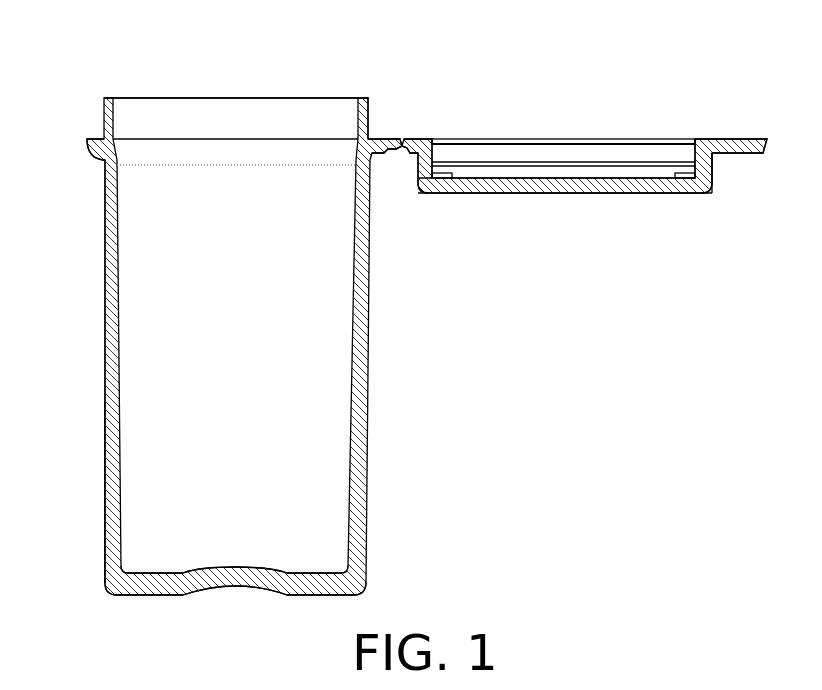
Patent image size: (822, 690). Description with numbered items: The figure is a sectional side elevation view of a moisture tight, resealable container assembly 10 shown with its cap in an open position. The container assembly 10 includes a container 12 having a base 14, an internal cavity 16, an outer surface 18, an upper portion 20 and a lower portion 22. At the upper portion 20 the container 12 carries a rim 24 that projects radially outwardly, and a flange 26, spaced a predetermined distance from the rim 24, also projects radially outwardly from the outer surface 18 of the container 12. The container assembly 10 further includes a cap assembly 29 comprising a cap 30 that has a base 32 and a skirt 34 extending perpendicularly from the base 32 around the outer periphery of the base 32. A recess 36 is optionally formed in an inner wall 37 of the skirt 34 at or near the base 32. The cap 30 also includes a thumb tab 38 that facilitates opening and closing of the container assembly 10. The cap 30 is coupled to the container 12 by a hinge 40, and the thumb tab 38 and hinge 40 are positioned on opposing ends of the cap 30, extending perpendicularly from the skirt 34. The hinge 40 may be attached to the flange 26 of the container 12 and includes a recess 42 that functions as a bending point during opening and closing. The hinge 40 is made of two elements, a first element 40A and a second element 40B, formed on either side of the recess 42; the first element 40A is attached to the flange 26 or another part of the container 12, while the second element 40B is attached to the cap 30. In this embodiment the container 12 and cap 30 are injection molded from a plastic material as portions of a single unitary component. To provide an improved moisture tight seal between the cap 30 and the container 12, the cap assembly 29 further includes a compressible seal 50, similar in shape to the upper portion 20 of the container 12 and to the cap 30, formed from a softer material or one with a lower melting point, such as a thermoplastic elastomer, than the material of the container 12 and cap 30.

The container assembly 10 is at (436, 419).
The container 12 is at (240, 98).
The base 14 is at (158, 588).
The internal cavity 16 is at (217, 367).
The outer surface 18 is at (103, 270).
The upper portion 20 is at (170, 98).
The lower portion 22 is at (107, 478).
The rim 24 is at (377, 97).
The flange 26 is at (89, 152).
The cap assembly 29 is at (582, 196).
The cap 30 is at (590, 136).
The base 32 is at (535, 183).
The skirt 34 is at (713, 155).
The recess 36 is at (418, 192).
The inner wall 37 is at (440, 155).
The thumb tab 38 is at (735, 138).
The hinge 40 is at (412, 136).
The first element 40A is at (401, 132).
The second element 40B is at (422, 138).
The recess 42 is at (397, 150).
The compressible seal 50 is at (442, 179).